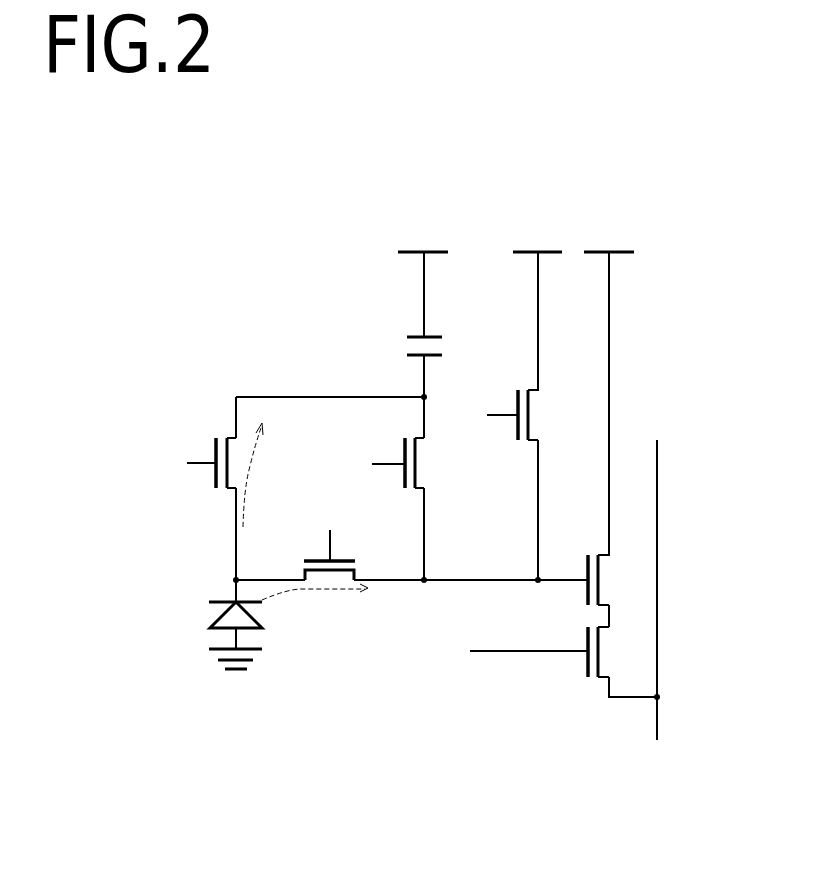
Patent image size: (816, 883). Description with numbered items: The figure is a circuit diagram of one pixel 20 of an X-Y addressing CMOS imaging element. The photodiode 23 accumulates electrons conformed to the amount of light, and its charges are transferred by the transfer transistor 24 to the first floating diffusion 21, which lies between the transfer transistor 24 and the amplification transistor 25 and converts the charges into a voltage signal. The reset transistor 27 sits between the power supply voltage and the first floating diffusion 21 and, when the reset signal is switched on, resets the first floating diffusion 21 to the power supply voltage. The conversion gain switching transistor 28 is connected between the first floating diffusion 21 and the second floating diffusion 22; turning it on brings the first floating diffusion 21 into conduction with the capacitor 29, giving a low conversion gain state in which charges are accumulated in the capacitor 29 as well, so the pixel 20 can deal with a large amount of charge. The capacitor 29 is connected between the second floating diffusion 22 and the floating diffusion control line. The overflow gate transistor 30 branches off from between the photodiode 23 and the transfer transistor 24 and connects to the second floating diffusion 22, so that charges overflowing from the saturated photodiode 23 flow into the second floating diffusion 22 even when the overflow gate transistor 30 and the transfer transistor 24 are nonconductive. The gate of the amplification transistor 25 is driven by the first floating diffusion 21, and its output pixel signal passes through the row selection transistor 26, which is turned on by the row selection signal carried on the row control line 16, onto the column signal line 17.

The pixel 20 is at (700, 165).
The first floating diffusion 21 is at (483, 545).
The second floating diffusion 22 is at (308, 360).
The photodiode 23 is at (215, 617).
The transfer transistor 24 is at (312, 558).
The amplification transistor 25 is at (587, 560).
The row selection transistor 26 is at (588, 672).
The reset transistor 27 is at (516, 392).
The DGC transistor 28 is at (403, 440).
The capacitor 29 is at (410, 336).
The overflow gate transistor 30 is at (213, 437).
The row control line 16 is at (527, 655).
The column signal line 17 is at (660, 552).